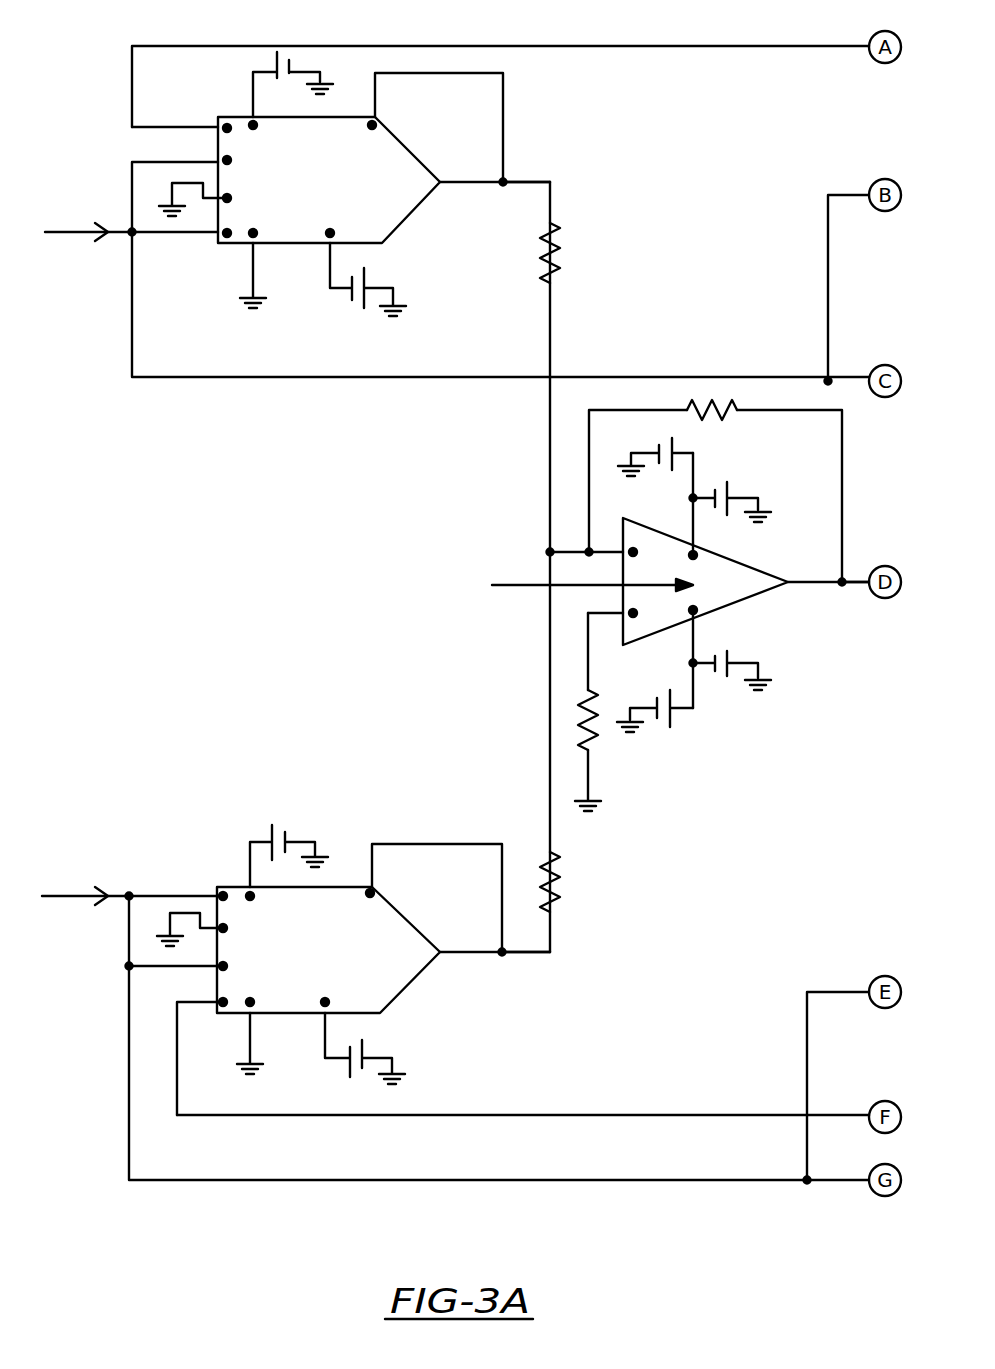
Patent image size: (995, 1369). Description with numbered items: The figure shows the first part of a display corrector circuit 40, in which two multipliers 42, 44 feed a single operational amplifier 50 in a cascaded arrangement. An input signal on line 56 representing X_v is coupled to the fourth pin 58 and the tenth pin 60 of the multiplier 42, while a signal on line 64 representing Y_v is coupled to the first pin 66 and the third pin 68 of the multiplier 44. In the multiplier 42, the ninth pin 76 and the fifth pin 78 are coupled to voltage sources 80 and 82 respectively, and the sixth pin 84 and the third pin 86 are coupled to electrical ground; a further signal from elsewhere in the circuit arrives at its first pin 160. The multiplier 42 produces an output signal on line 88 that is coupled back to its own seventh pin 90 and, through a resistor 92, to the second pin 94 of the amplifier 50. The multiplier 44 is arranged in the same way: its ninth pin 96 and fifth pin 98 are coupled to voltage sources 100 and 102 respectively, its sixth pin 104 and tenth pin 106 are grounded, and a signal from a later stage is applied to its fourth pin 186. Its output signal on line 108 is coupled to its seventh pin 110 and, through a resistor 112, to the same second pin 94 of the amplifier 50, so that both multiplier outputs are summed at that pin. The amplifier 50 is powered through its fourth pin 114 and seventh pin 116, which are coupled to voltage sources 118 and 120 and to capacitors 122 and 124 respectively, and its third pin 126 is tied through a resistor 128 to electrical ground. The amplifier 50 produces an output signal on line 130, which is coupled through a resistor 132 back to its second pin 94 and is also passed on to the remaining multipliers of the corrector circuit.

The display corrector circuit 40 is at (92, 61).
The multiplier 42 is at (413, 192).
The multiplier 44 is at (407, 965).
The operational amplifier 50 is at (757, 582).
The line 56 is at (107, 238).
The fourth pin 58 is at (229, 237).
The tenth pin 60 is at (226, 158).
The line 64 is at (103, 895).
The first pin 66 is at (220, 896).
The third pin 68 is at (222, 968).
The ninth pin 76 is at (255, 126).
The fifth pin 78 is at (330, 232).
The voltage source 80 is at (282, 58).
The voltage source 82 is at (360, 299).
The sixth pin 84 is at (254, 233).
The third pin 86 is at (229, 198).
The line 88 is at (530, 180).
The seventh pin 90 is at (375, 128).
The resistor 92 is at (555, 250).
The second pin 94 is at (633, 550).
The ninth pin 96 is at (252, 897).
The fifth pin 98 is at (326, 1001).
The voltage source 100 is at (280, 838).
The voltage source 102 is at (353, 1070).
The sixth pin 104 is at (290, 990).
The tenth pin 106 is at (226, 930).
The line 108 is at (508, 958).
The seventh pin 110 is at (374, 895).
The resistor 112 is at (555, 880).
The fourth pin 114 is at (695, 608).
The seventh pin 116 is at (688, 552).
The voltage source 118 is at (668, 720).
The voltage source 120 is at (668, 448).
The capacitor 122 is at (727, 493).
The capacitor 124 is at (720, 678).
The third pin 126 is at (635, 615).
The resistor 128 is at (583, 720).
The line 130 is at (860, 582).
The resistor 132 is at (722, 400).
The first pin 160 is at (222, 124).
The fourth pin 186 is at (225, 1003).